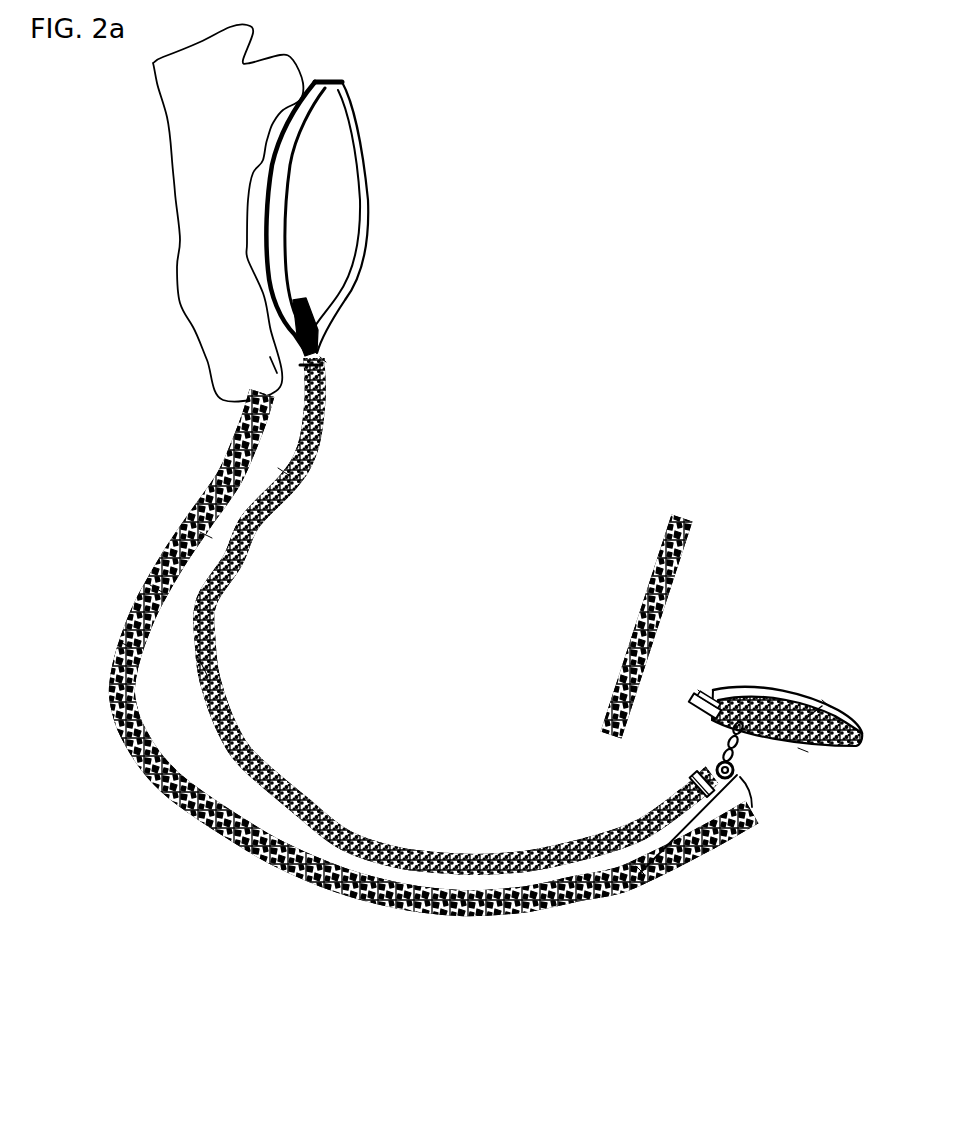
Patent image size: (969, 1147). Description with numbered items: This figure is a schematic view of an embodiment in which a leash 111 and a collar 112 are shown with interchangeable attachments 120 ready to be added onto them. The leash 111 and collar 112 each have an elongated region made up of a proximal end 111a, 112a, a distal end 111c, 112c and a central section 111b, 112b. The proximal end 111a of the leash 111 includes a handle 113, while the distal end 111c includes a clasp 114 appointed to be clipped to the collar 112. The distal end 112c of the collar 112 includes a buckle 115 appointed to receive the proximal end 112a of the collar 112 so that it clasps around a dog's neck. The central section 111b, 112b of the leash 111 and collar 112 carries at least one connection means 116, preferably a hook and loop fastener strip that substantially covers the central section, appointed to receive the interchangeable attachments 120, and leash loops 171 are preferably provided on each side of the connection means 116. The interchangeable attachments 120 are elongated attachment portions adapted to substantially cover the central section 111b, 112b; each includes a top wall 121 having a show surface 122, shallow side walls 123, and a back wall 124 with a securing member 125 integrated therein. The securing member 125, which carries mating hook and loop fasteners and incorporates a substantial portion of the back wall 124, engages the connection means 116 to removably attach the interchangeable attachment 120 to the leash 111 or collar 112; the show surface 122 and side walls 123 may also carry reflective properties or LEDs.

The leash 111 is at (223, 562).
The proximal end of leash 111a is at (297, 312).
The central section of leash 111b is at (195, 665).
The distal end of leash 111c is at (708, 775).
The collar 112 is at (786, 764).
The proximal end of collar 112a is at (700, 703).
The central section of collar 112b is at (826, 703).
The distal end of collar 112c is at (700, 694).
The handle 113 is at (275, 197).
The clasp 114 is at (740, 790).
The buckle 115 is at (700, 707).
The connection means 116 is at (283, 472).
The interchangeable attachment 120 is at (178, 792).
The top wall 121 is at (156, 588).
The show surface 122 is at (126, 645).
The side walls 123 is at (205, 535).
The back wall 124 is at (318, 890).
The securing member 125 is at (468, 910).
The leash loops 171 is at (322, 357).